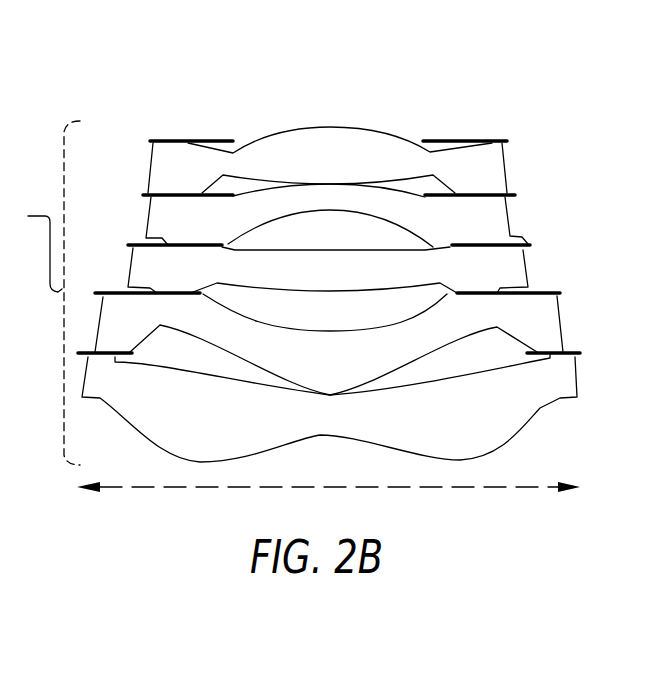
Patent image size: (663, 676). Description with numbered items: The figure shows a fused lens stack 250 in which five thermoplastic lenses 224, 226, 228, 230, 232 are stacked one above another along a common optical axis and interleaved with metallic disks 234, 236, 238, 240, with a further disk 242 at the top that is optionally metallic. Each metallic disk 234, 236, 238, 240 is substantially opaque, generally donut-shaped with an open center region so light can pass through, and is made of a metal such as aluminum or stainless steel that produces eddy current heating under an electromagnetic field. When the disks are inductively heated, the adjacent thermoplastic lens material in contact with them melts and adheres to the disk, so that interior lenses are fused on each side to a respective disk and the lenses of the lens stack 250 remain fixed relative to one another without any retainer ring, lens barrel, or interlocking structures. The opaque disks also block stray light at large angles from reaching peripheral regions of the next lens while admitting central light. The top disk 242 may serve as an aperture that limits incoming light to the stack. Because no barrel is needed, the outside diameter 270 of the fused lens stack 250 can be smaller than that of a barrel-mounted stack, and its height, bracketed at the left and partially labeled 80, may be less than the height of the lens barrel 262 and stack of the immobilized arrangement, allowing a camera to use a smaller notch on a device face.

The lens 224 is at (329, 408).
The lens 226 is at (329, 344).
The lens 228 is at (328, 270).
The lens 230 is at (337, 215).
The lens 232 is at (327, 160).
The metallic disk 234 is at (575, 354).
The metallic disk 236 is at (547, 291).
The metallic disk 238 is at (525, 243).
The metallic disk 240 is at (515, 193).
The disk 242 is at (508, 139).
The lens stack 250 is at (423, 50).
The lens barrel 262 is at (0, 377).
The lens group 80 is at (31, 247).
The outside diameter 270 is at (463, 488).